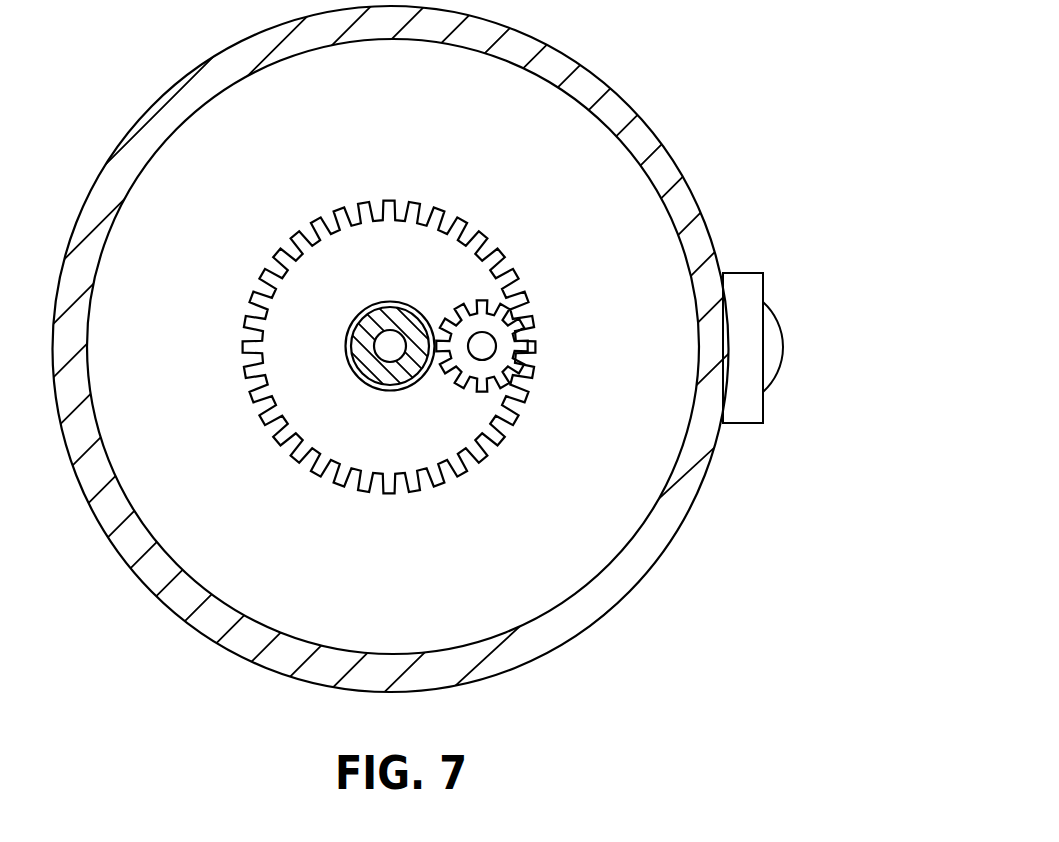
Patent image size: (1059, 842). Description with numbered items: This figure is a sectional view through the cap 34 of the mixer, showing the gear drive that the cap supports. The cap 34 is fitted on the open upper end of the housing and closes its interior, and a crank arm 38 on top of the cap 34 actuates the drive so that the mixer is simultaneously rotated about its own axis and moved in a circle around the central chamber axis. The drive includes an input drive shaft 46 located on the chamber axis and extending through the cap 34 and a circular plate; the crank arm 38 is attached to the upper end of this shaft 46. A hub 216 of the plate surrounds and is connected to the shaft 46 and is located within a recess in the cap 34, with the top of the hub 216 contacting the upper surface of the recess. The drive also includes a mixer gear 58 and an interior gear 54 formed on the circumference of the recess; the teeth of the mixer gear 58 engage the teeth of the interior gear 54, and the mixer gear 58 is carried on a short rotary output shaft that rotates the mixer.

The cap 34 is at (605, 82).
The crank arm 38 is at (741, 273).
The input drive shaft 46 is at (394, 340).
The interior gear 54 is at (274, 424).
The mixer gear 58 is at (463, 387).
The hub 216 is at (376, 370).